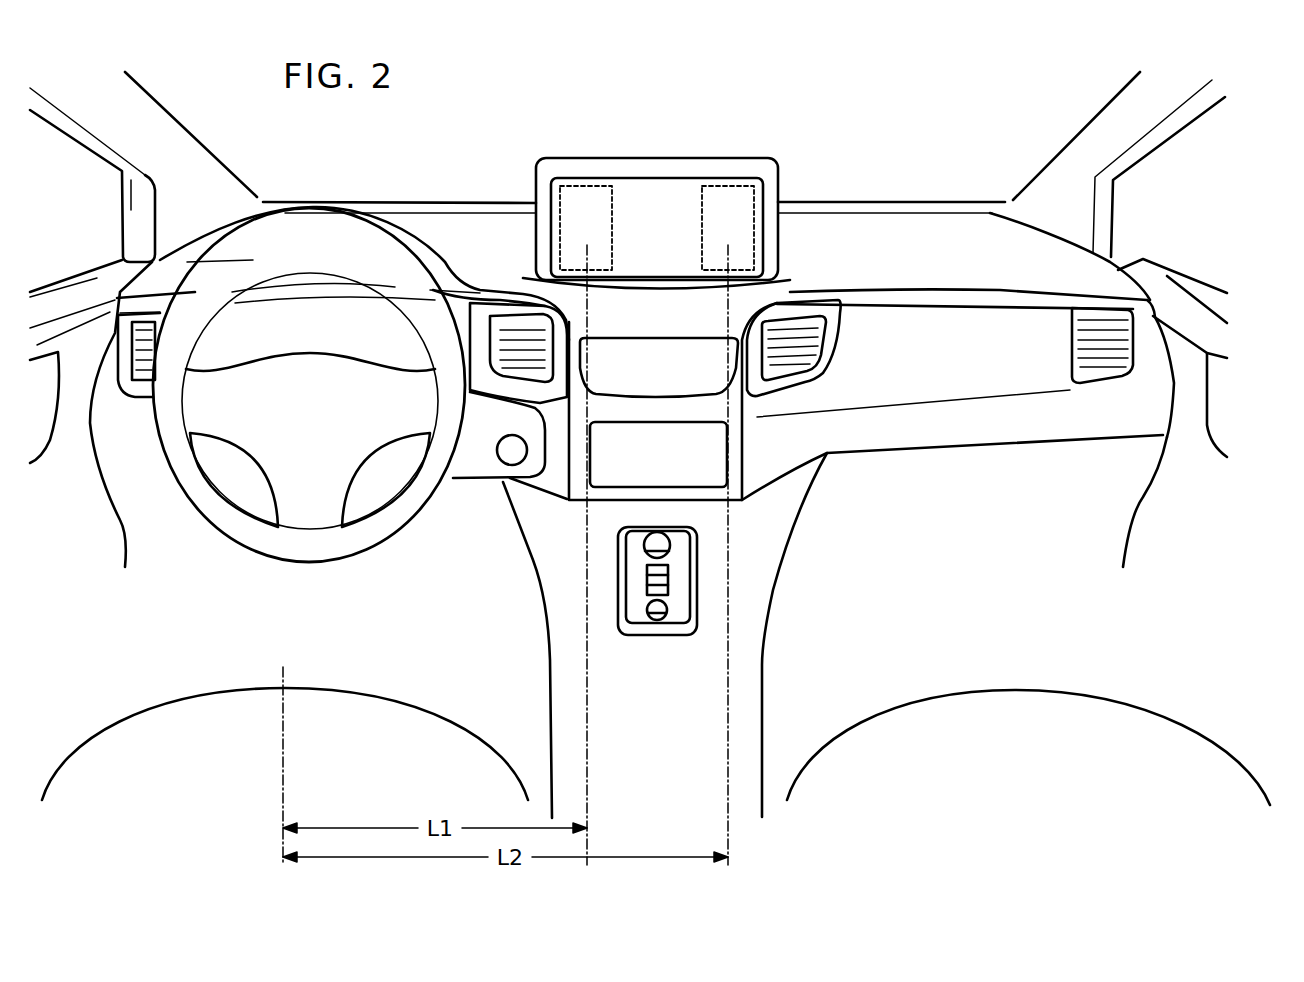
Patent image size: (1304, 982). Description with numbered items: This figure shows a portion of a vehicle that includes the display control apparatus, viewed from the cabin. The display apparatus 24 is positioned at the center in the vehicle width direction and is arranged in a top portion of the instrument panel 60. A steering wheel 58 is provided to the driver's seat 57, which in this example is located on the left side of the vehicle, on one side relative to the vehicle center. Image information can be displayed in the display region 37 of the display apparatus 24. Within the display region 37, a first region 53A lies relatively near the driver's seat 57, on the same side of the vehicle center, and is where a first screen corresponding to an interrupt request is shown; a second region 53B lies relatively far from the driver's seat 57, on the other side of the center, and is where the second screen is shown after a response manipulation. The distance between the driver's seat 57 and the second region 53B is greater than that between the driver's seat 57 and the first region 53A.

The display apparatus 24 is at (688, 170).
The display region 37 is at (635, 200).
The first region 53A is at (587, 193).
The second region 53B is at (745, 193).
The driver's seat 57 is at (198, 720).
The steering wheel 58 is at (327, 258).
The instrument panel 60 is at (851, 237).